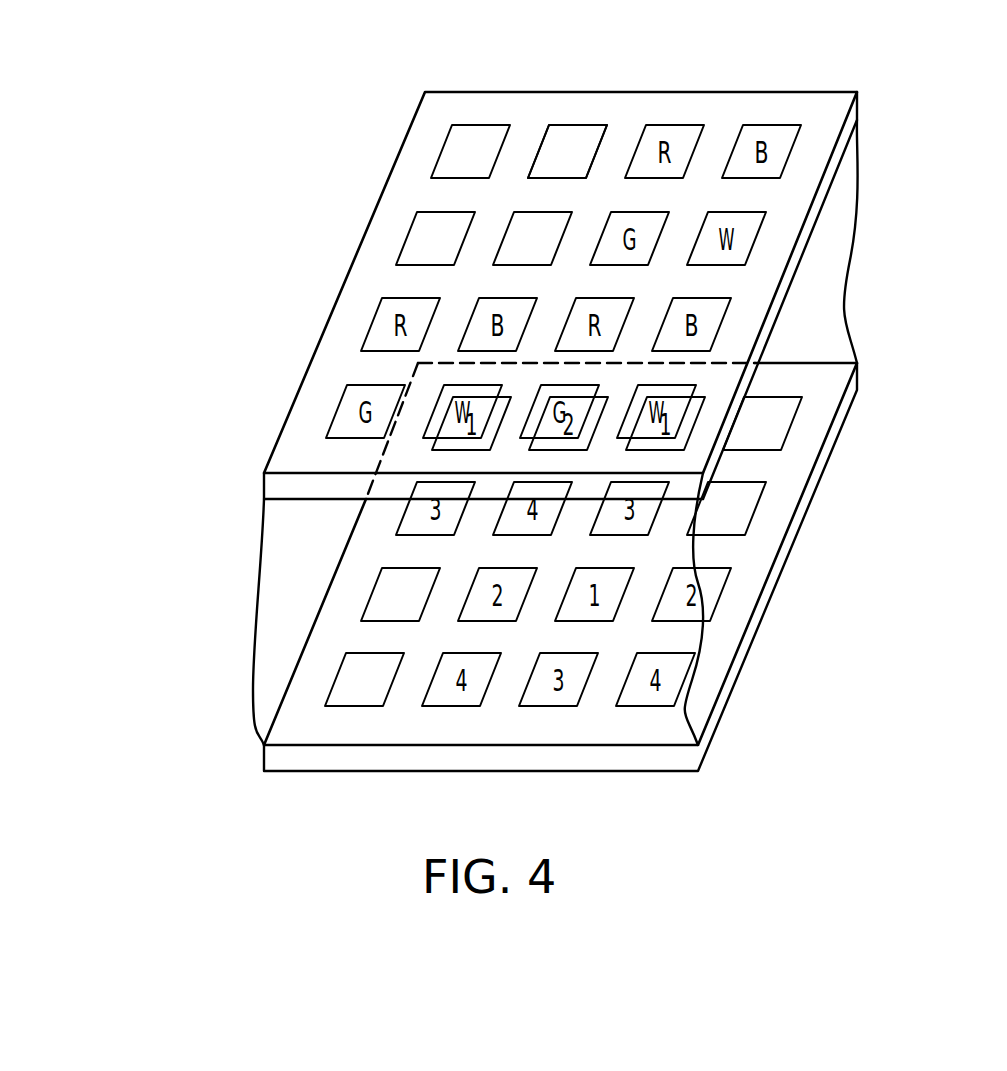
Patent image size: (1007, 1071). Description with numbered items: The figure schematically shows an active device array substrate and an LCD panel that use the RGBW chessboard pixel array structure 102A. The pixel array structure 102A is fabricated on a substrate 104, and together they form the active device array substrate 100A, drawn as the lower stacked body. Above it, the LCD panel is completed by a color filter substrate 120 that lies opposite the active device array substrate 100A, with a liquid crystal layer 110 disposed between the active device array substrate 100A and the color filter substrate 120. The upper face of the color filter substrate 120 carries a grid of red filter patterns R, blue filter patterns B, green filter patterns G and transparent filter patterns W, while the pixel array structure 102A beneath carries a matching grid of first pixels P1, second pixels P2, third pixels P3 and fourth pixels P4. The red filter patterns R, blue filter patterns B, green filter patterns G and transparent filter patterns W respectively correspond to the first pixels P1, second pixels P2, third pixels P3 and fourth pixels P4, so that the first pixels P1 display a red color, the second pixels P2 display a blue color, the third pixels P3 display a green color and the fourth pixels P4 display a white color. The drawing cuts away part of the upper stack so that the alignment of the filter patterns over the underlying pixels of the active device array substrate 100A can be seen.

The color filter substrate 120 is at (822, 108).
The liquid crystal layer 110 is at (818, 338).
The red filter patterns R is at (445, 152).
The green filter patterns G is at (406, 240).
The blue filter patterns B is at (578, 125).
The transparent filter patterns W is at (517, 212).
The first pixels P1 is at (370, 595).
The second pixels P2 is at (791, 425).
The third pixels P3 is at (333, 680).
The fourth pixels P4 is at (754, 511).
The active device array substrate 100A is at (635, 567).
The pixel array structure 102A is at (668, 729).
The substrate 104 is at (678, 758).